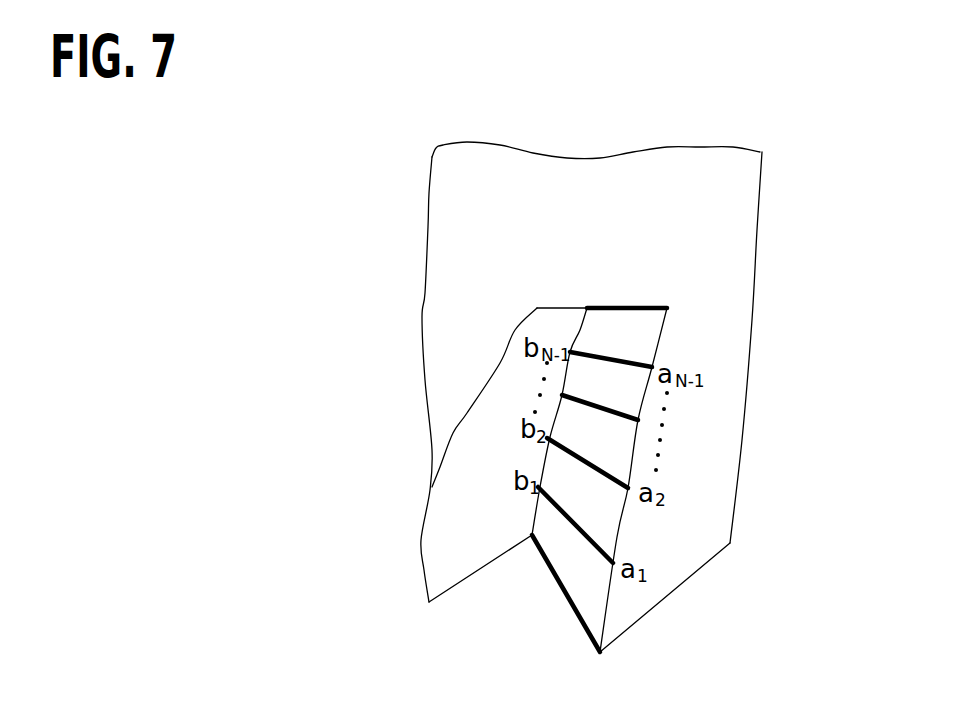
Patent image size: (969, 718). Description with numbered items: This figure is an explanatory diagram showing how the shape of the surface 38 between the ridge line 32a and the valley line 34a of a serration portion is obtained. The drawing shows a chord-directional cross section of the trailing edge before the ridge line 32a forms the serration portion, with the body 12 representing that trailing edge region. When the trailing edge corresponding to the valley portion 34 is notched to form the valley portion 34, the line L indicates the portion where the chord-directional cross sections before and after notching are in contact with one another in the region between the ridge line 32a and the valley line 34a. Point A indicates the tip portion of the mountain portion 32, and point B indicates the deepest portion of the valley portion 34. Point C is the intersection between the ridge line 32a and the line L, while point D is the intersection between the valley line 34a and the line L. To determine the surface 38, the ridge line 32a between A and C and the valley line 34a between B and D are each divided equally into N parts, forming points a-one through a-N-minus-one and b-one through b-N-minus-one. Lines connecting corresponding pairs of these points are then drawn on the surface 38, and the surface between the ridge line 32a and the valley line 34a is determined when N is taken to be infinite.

The workpiece / object 12 is at (670, 146).
The mountain portion 32 is at (645, 617).
The ridge line 32a is at (635, 450).
The valley portion 34 is at (533, 550).
The valley line 34a is at (557, 413).
The surface 38 is at (588, 503).
The tip portion of the mountain portion A is at (599, 674).
The deepest portion of the valley portion B is at (528, 538).
The intersection between the ridge line and the line L C is at (667, 308).
The intersection between the valley line and the line L D is at (587, 308).
The line L is at (560, 308).